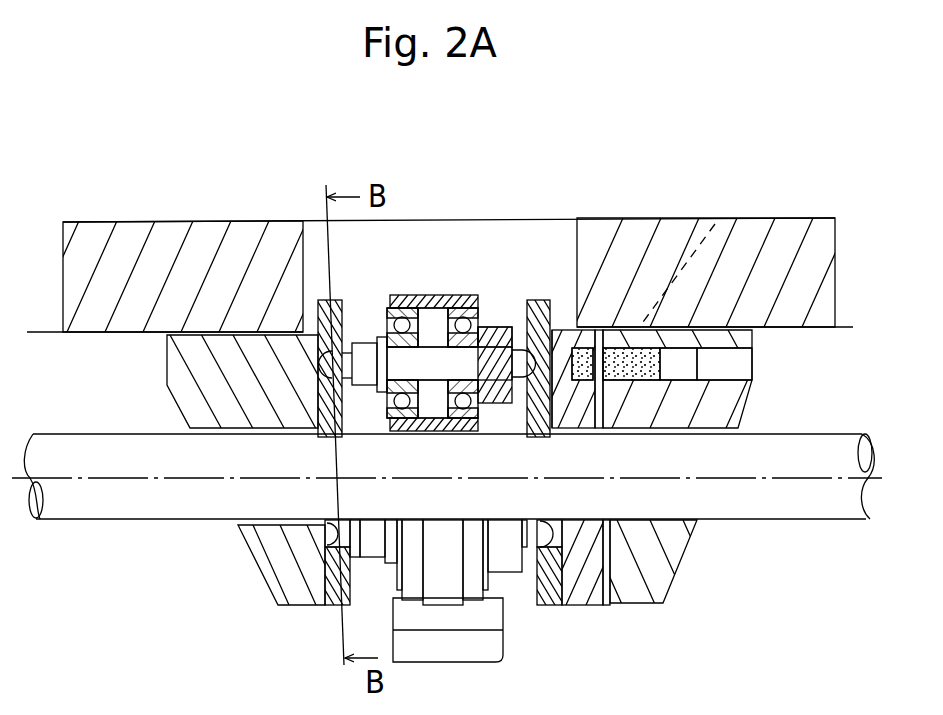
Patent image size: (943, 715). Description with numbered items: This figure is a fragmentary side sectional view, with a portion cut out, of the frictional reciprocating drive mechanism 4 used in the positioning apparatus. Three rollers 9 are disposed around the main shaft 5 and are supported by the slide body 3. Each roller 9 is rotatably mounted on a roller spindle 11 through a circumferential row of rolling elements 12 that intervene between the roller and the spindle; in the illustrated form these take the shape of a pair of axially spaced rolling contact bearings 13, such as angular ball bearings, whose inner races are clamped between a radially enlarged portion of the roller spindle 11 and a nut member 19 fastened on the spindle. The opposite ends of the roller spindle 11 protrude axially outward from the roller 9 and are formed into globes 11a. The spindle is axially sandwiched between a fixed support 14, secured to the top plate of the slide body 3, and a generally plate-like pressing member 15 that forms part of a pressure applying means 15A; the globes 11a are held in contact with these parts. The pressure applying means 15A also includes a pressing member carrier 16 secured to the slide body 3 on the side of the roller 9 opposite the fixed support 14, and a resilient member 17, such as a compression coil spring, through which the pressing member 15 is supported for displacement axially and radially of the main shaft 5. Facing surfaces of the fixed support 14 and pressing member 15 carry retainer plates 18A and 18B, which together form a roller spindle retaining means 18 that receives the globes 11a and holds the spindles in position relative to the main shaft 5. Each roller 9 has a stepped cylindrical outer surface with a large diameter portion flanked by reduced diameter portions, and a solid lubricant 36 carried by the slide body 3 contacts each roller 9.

The slide body 3 is at (792, 220).
The frictional reciprocating drive mechanism 4 is at (757, 208).
The main shaft 5 is at (157, 505).
The roller 9 is at (421, 300).
The roller spindle 11 is at (497, 325).
The globe 11a is at (318, 340).
The rolling element 12 is at (462, 297).
The rolling contact bearing 13 is at (390, 303).
The fixed support 14 is at (207, 353).
The pressing member 15 is at (585, 326).
The pressure applying means 15A is at (577, 327).
The pressing member carrier 16 is at (663, 573).
The resilient member 17 is at (725, 207).
The roller spindle retaining means 18 is at (316, 573).
The retainer plate 18A is at (335, 592).
The retainer plate 18B is at (567, 603).
The nut member 19 is at (505, 325).
The solid lubricant 36 is at (462, 655).